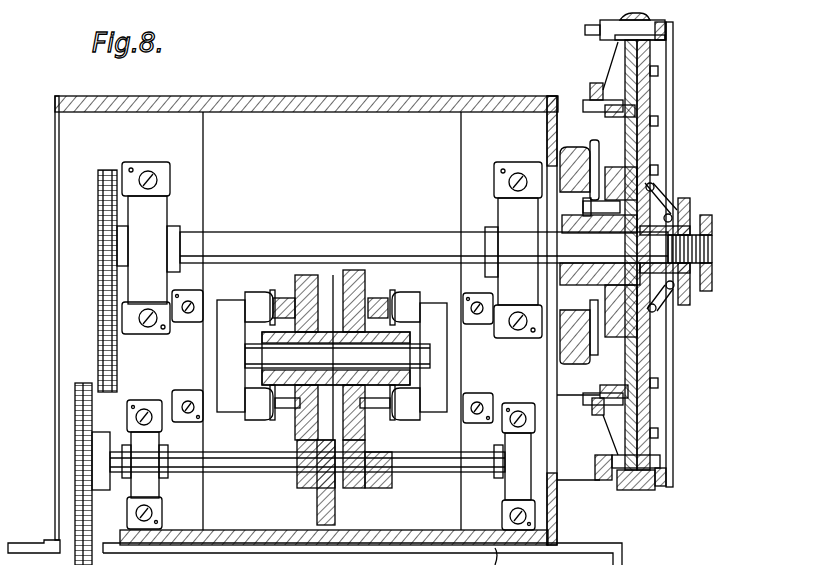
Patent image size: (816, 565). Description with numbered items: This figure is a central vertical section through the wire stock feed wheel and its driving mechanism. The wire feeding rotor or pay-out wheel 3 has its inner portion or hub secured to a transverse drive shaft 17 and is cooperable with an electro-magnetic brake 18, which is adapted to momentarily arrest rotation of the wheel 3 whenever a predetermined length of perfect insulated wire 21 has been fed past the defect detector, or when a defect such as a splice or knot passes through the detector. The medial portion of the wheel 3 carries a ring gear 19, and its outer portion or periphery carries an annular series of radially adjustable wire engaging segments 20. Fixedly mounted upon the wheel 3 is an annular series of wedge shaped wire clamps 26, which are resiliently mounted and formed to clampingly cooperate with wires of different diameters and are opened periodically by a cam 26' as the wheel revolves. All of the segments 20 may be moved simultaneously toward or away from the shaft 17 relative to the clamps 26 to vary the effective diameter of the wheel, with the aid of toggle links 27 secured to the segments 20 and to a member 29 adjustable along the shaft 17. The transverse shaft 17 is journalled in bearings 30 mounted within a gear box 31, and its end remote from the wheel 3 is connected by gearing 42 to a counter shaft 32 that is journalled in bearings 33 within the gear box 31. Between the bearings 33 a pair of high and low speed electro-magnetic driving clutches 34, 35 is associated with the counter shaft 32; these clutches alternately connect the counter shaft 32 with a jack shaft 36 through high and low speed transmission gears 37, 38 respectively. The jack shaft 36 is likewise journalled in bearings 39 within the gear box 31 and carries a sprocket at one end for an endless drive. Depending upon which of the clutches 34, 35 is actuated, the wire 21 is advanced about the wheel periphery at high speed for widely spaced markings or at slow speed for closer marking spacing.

The wire feeding rotor or pay-out wheel 3 is at (626, 492).
The transverse drive shaft 17 is at (358, 248).
The electro-magnetic brake 18 is at (578, 151).
The ring gear 19 is at (593, 83).
The wire engaging segments 20 is at (650, 101).
The insulated wire 21 is at (660, 24).
The wedge shaped wire clamps 26 is at (682, 266).
The cam 26' is at (599, 486).
The toggle links 27 is at (672, 196).
The adjustable member 29 is at (712, 283).
The bearings 30 is at (329, 250).
The gear box 31 is at (332, 110).
The counter shaft 32 is at (337, 357).
The bearings 33 is at (186, 372).
The high speed electro-magnetic driving clutch 34 is at (258, 302).
The low speed electro-magnetic driving clutch 35 is at (405, 303).
The jack shaft 36 is at (218, 466).
The high speed transmission gear 37 is at (320, 510).
The low speed transmission gear 38 is at (354, 487).
The bearings 39 is at (147, 486).
The gearing 42 is at (98, 326).